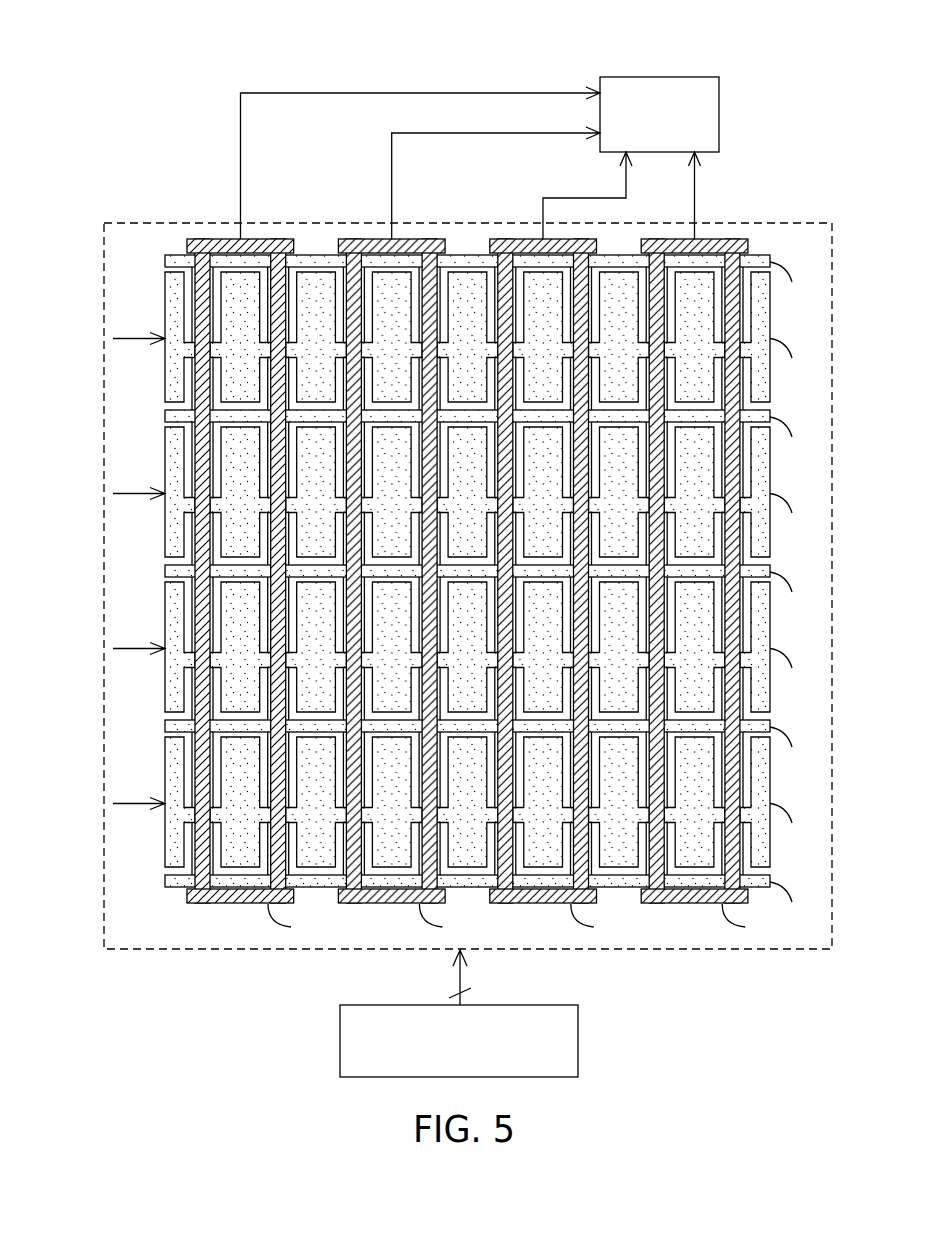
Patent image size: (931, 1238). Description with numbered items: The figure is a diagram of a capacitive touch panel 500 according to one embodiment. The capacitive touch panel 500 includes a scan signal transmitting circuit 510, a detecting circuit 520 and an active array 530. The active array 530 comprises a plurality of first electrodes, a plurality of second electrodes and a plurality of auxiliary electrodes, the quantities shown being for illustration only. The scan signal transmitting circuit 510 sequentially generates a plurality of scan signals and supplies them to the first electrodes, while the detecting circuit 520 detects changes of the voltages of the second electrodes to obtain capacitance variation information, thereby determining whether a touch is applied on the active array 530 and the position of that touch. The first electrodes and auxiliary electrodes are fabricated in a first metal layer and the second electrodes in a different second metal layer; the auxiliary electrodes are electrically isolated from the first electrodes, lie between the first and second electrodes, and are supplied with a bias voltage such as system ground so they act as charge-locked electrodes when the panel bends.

The capacitive touch panel 500 is at (208, 76).
The scan signal transmitting circuit 510 is at (340, 1040).
The detecting circuit 520 is at (660, 77).
The active array 530 is at (660, 950).